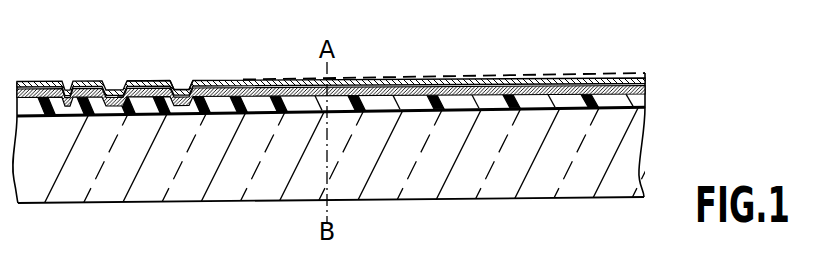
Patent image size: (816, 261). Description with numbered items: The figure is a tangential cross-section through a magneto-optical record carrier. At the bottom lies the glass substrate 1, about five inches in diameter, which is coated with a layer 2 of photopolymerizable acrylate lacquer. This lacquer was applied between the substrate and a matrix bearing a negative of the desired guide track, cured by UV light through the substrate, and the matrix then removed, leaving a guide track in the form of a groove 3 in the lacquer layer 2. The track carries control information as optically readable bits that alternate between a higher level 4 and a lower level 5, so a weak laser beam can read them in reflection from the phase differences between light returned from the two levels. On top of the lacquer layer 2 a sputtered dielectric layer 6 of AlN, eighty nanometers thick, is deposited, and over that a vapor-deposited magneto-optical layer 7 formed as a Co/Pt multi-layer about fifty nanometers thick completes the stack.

The glass substrate 1 is at (623, 167).
The lacquer layer 2 is at (622, 99).
The groove 3 is at (558, 78).
The higher level 4 is at (150, 80).
The lower level 5 is at (188, 94).
The dielectric layer 6 is at (507, 83).
The magneto-optical layer 7 is at (445, 76).